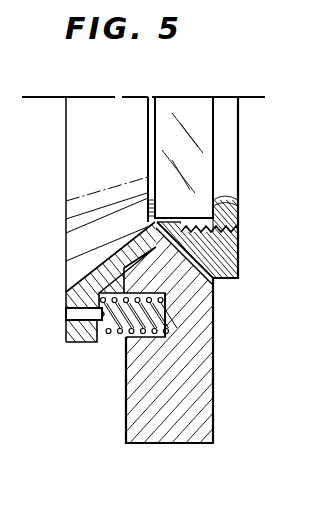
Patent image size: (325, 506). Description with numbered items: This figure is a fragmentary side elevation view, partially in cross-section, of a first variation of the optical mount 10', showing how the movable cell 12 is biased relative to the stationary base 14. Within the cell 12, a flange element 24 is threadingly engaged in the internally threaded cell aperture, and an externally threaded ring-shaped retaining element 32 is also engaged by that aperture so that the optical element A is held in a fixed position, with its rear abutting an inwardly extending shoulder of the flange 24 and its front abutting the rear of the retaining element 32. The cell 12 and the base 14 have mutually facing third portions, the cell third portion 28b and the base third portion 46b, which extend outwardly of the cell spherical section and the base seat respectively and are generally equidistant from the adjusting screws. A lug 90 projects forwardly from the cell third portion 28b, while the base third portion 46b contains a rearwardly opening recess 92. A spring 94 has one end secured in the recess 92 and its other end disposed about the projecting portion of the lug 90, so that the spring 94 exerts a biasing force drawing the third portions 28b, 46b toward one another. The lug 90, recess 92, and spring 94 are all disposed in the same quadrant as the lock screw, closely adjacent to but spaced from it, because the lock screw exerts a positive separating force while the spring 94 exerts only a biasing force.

The mount 10' is at (148, 65).
The optical element A is at (208, 157).
The movable cell 12 is at (243, 256).
The stationary base 14 is at (216, 388).
The flange element 24 is at (107, 246).
The cell third portion 28b is at (66, 306).
The retaining element 32 is at (237, 205).
The base third portion 46b is at (126, 403).
The lug 90 is at (66, 320).
The recess 92 is at (155, 315).
The spring 94 is at (166, 326).